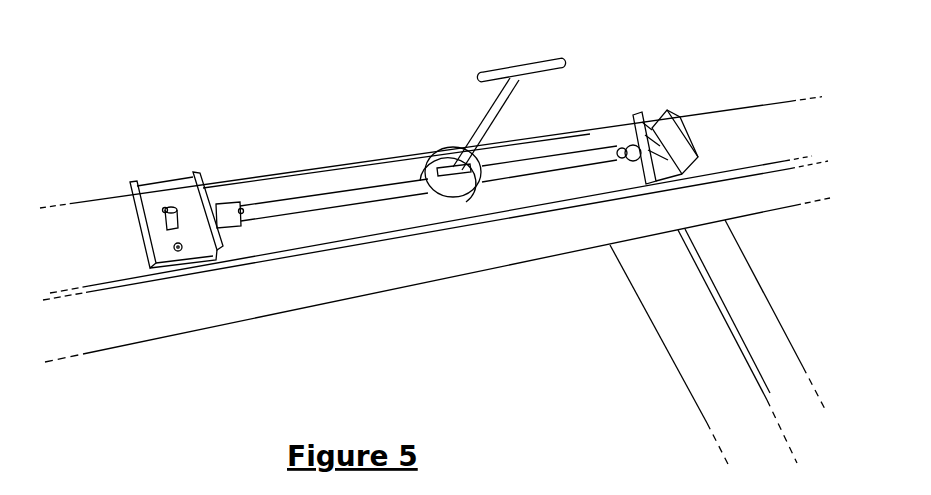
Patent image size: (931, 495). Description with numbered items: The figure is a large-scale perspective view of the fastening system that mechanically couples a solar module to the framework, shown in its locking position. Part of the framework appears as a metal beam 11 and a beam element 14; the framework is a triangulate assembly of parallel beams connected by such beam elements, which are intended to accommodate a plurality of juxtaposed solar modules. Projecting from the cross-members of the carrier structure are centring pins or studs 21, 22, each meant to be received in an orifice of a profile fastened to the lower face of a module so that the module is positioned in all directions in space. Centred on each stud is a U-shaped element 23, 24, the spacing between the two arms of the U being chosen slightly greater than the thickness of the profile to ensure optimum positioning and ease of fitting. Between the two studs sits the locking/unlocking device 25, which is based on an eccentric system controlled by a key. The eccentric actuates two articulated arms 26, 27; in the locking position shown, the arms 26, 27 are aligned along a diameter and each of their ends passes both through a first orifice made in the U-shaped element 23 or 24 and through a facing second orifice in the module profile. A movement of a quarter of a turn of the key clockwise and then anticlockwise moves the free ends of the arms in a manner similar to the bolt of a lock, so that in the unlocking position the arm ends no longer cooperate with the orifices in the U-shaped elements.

The metal beam 11 is at (700, 368).
The beam element 14 is at (348, 284).
The centring pin 21 is at (187, 245).
The centring pin 22 is at (660, 134).
The U-shaped element 23 is at (207, 186).
The U-shaped element 24 is at (683, 147).
The locking/unlocking device 25 is at (470, 197).
The articulated arm 26 is at (353, 195).
The articulated arm 27 is at (548, 163).